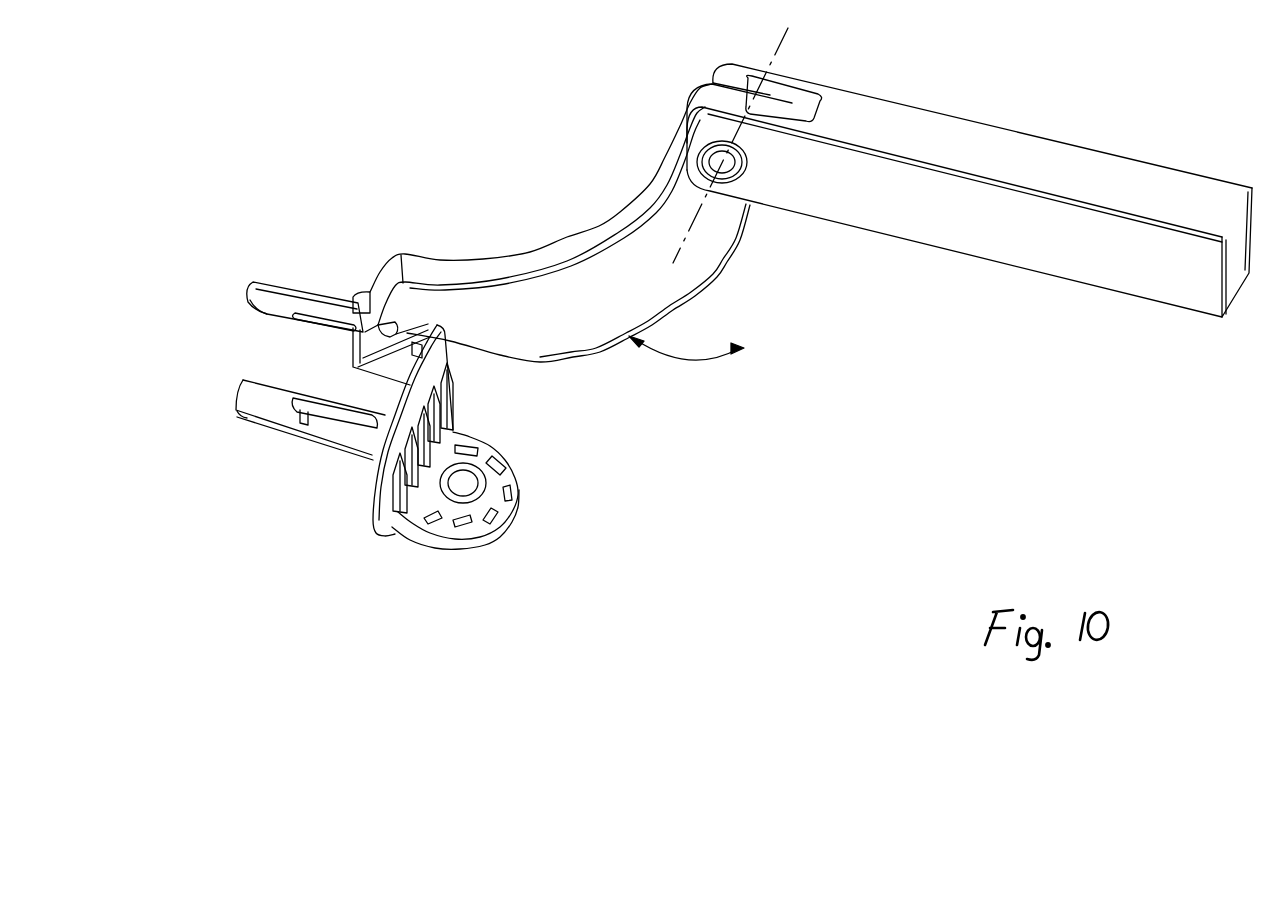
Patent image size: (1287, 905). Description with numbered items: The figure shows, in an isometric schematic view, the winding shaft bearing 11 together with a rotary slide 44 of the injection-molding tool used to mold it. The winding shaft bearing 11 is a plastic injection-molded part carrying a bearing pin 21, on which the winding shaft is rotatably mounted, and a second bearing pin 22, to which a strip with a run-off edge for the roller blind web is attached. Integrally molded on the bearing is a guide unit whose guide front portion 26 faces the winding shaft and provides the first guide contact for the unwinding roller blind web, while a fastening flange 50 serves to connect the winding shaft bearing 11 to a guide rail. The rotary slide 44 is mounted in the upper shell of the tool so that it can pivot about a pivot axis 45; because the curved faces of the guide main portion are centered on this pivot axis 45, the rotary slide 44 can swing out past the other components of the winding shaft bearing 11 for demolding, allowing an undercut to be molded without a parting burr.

The winding shaft bearing 11 is at (578, 428).
The bearing pin 21 is at (292, 408).
The bearing pin 22 is at (285, 303).
The guide front portion 26 is at (373, 329).
The rotary slide 44 is at (896, 297).
The pivot axis 45 is at (718, 163).
The fastening flange 50 is at (473, 527).